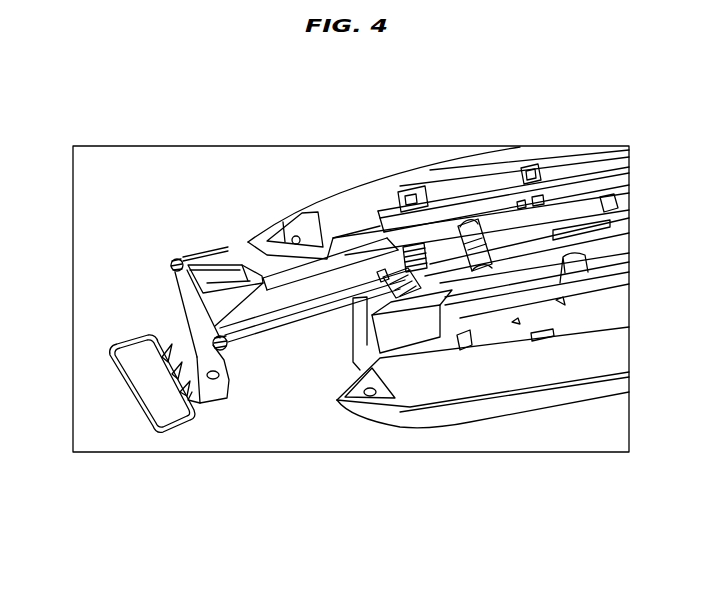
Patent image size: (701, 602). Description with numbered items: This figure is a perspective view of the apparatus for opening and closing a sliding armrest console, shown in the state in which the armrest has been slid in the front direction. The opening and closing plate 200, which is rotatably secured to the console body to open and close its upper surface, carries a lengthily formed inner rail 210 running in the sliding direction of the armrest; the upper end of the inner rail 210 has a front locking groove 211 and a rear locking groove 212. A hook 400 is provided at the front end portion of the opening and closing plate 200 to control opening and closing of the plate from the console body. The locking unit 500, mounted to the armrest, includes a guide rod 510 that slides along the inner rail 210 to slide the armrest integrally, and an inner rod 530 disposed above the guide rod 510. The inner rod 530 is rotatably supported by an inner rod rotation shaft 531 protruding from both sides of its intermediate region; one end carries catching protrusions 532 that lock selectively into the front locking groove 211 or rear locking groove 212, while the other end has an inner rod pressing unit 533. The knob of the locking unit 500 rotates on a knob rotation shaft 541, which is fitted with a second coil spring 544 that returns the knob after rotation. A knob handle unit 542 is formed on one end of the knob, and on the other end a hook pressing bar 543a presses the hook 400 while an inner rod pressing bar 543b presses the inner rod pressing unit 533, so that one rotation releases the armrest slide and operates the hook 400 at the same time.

The opening and closing plate 200 is at (342, 207).
The inner rail 210 is at (483, 222).
The front locking groove 211 is at (447, 190).
The rear locking groove 212 is at (600, 197).
The hook 400 is at (337, 400).
The locking unit 500 is at (163, 263).
The guide rod 510 is at (317, 307).
The inner rod 530 is at (295, 303).
The inner rod rotation shaft 531 is at (393, 287).
The catching protrusions 532 is at (497, 232).
The inner rod pressing unit 533 is at (265, 307).
The knob rotation shaft 541 is at (229, 395).
The knob handle unit 542 is at (157, 415).
The hook pressing bar 543a is at (232, 300).
The inner rod pressing bar 543b is at (262, 300).
The second coil spring 544 is at (190, 257).